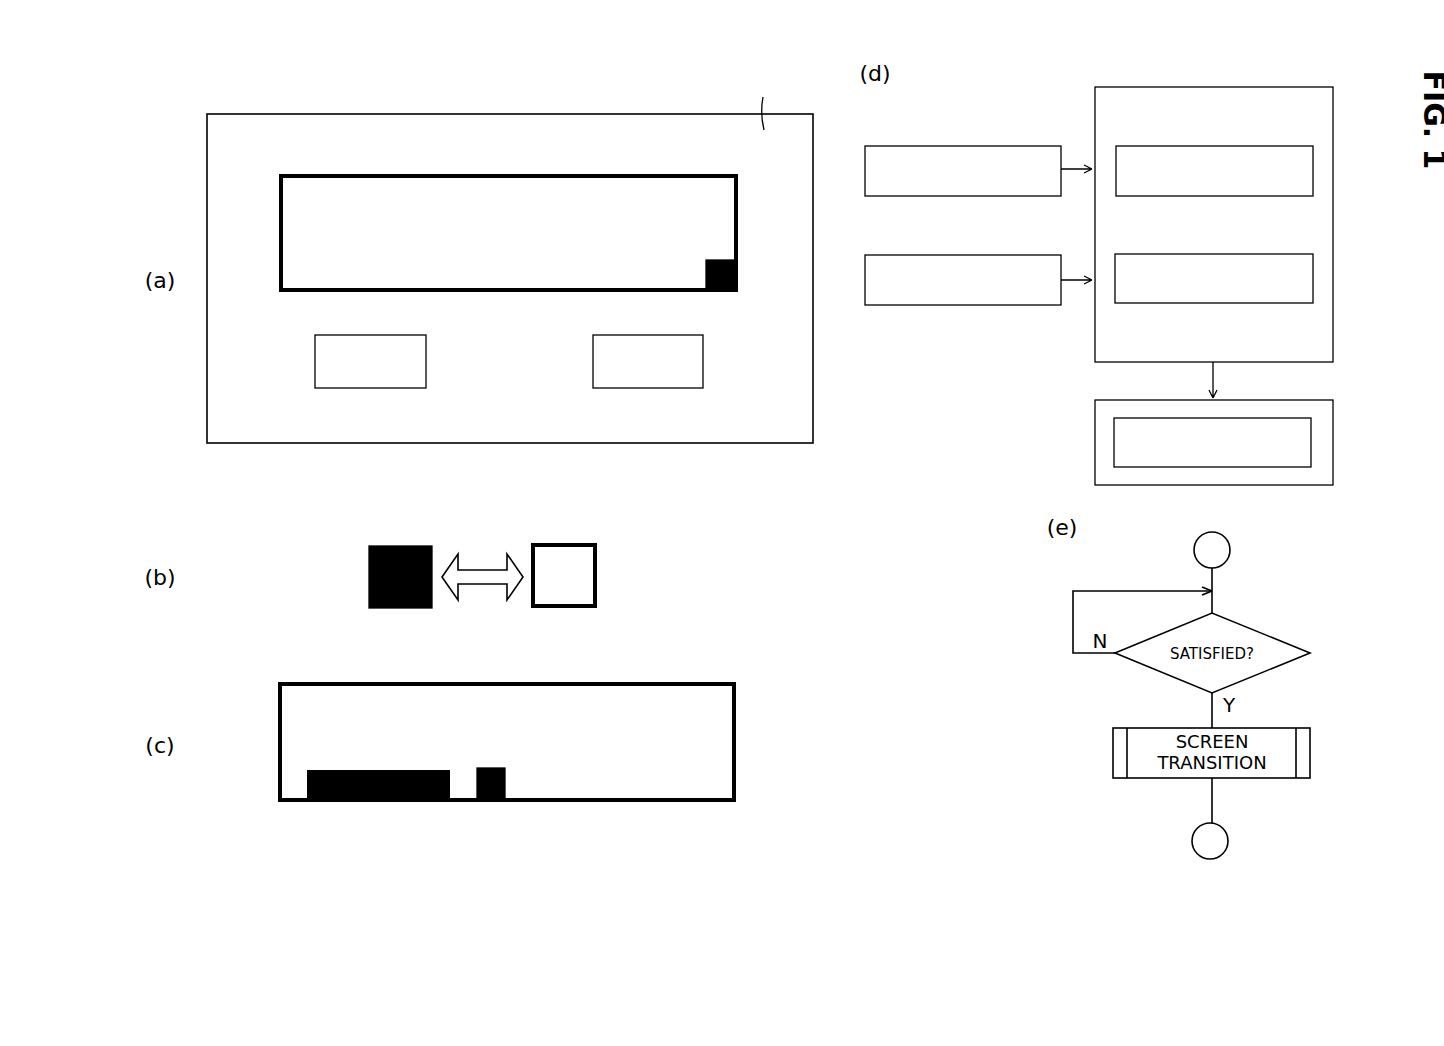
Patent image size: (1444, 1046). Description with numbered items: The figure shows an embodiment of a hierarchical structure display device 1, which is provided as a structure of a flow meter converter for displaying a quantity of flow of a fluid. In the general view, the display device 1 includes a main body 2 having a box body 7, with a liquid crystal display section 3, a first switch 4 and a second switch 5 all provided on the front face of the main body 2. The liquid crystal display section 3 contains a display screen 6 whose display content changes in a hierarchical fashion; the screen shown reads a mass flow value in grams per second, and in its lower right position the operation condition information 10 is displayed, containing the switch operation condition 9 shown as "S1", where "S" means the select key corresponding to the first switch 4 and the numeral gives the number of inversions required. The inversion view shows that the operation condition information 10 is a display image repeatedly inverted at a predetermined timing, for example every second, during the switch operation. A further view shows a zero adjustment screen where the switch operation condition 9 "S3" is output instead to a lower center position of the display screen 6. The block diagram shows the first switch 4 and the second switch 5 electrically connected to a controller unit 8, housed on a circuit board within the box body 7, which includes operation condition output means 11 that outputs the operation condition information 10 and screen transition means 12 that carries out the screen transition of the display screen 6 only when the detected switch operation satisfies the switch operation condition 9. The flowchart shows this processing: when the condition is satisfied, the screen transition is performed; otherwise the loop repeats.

The display device 1 is at (510, 254).
The main body 2 is at (313, 114).
The liquid crystal display section 3 is at (405, 176).
The first switch 4 is at (373, 367).
The second switch 5 is at (682, 365).
The display screen 6 is at (302, 273).
The box body 7 is at (765, 100).
The controller unit 8 is at (1333, 90).
The switch operation condition 9 is at (707, 270).
The operation condition information 10 is at (723, 292).
The operation condition output means 11 is at (1290, 146).
The screen transition means 12 is at (1290, 254).